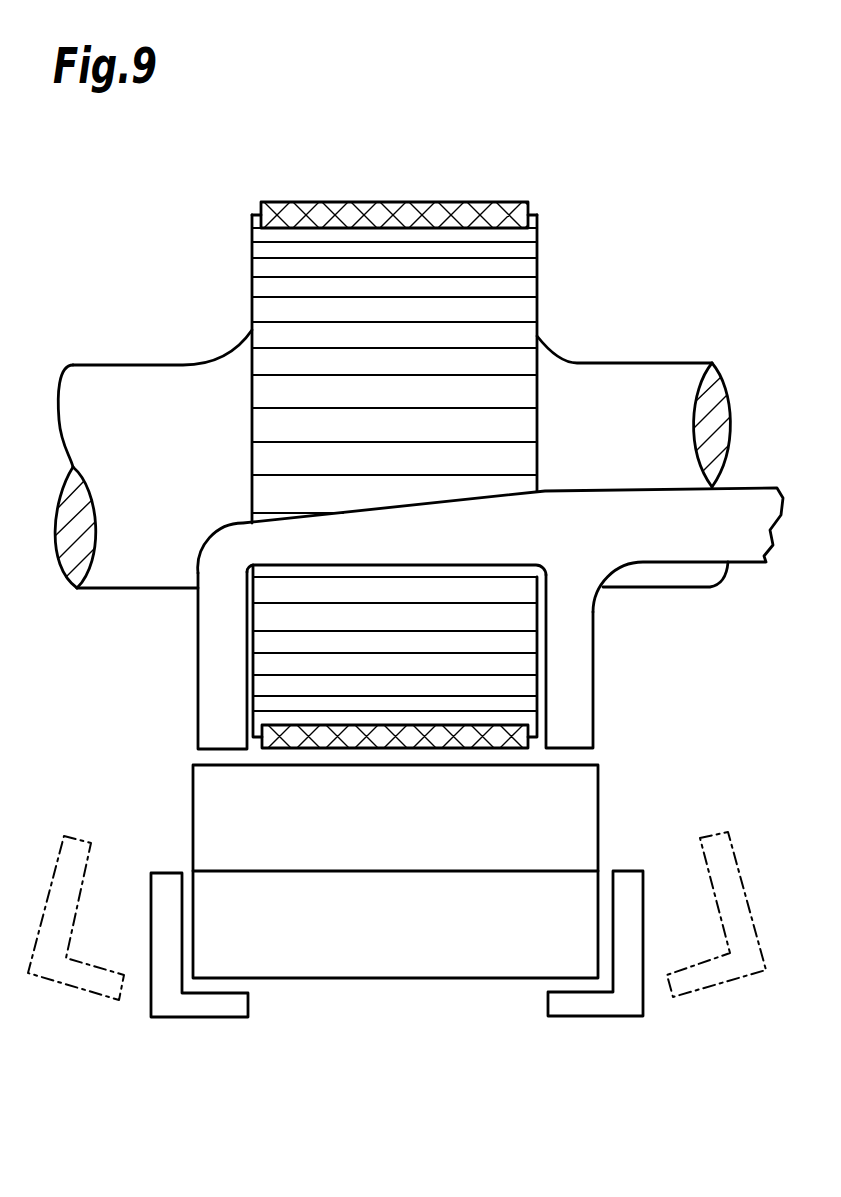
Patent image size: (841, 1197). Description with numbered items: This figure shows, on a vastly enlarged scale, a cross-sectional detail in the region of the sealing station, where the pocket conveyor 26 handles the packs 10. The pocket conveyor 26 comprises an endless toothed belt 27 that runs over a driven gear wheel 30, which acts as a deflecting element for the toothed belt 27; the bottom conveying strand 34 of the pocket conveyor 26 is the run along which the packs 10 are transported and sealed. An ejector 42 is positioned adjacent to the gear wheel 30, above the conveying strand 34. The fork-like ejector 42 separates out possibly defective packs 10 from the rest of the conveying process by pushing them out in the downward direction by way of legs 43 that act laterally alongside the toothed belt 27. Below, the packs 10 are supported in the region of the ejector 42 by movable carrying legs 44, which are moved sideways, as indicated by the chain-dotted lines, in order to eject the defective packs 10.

The pack 10 is at (334, 885).
The pocket conveyor 26 is at (413, 124).
The toothed belt 27 is at (468, 202).
The gear wheel 30 is at (517, 307).
The bottom conveying strand 34 is at (350, 732).
The ejector 42 is at (618, 618).
The legs 43 is at (217, 722).
The carrying legs 44 is at (197, 1003).